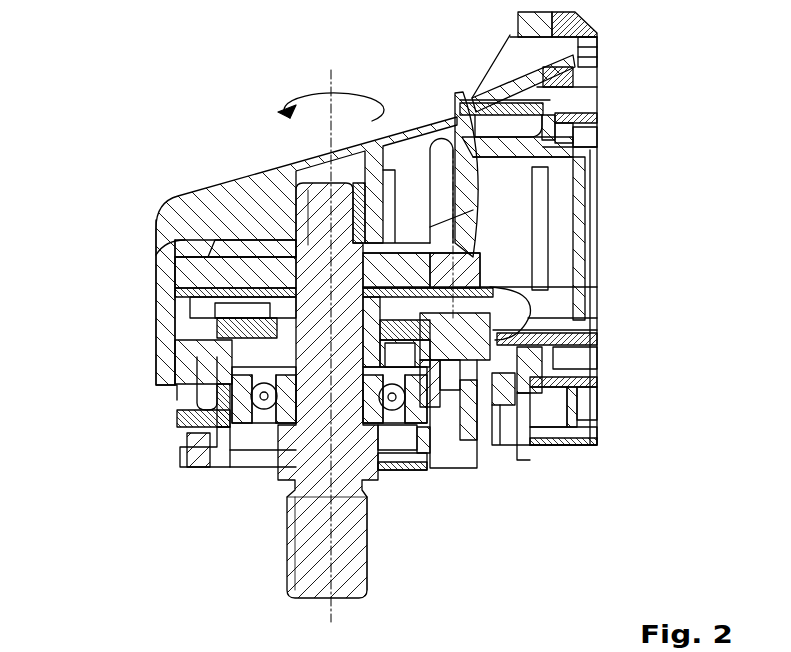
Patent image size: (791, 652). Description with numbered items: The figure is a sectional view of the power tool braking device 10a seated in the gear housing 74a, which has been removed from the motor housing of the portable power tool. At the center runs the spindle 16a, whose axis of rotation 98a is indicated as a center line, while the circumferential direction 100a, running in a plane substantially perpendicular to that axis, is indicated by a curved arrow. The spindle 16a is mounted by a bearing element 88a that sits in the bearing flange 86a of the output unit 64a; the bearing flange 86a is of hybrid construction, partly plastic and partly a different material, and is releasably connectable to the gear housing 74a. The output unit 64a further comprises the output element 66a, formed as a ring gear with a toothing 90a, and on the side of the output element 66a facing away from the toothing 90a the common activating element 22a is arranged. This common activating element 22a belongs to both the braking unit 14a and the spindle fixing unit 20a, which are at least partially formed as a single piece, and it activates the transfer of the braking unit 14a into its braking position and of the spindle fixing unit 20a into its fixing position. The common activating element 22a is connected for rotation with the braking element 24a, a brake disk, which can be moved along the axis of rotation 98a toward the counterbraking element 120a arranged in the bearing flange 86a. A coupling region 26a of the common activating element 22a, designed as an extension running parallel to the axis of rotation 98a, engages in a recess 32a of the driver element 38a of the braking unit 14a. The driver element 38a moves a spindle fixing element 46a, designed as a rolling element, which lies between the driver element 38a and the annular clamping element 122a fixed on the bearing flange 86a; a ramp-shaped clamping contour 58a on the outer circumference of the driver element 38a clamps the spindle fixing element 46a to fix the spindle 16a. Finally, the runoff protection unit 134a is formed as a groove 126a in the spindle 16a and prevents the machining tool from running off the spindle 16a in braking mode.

The power tool braking device 10a is at (125, 200).
The braking unit 14a is at (152, 341).
The spindle 16a is at (310, 553).
The spindle fixing unit 20a is at (518, 308).
The common activating element 22a is at (215, 283).
The braking element 24a is at (200, 358).
The coupling region 26a is at (232, 300).
The recess 32a is at (233, 314).
The driver element 38a is at (446, 290).
The spindle fixing element 46a is at (545, 326).
The clamping contour 58a is at (478, 286).
The output unit 64a is at (241, 213).
The output element 66a is at (212, 262).
The gear housing 74a is at (455, 128).
The bearing flange 86a is at (183, 402).
The bearing element 88a is at (247, 418).
The toothing 90a is at (185, 252).
The axis of rotation 98a is at (335, 84).
The circumferential direction 100a is at (312, 92).
The counterbraking element 120a is at (195, 388).
The clamping element 122a is at (493, 288).
The groove 126a is at (360, 556).
The runoff protection unit 134a is at (485, 526).